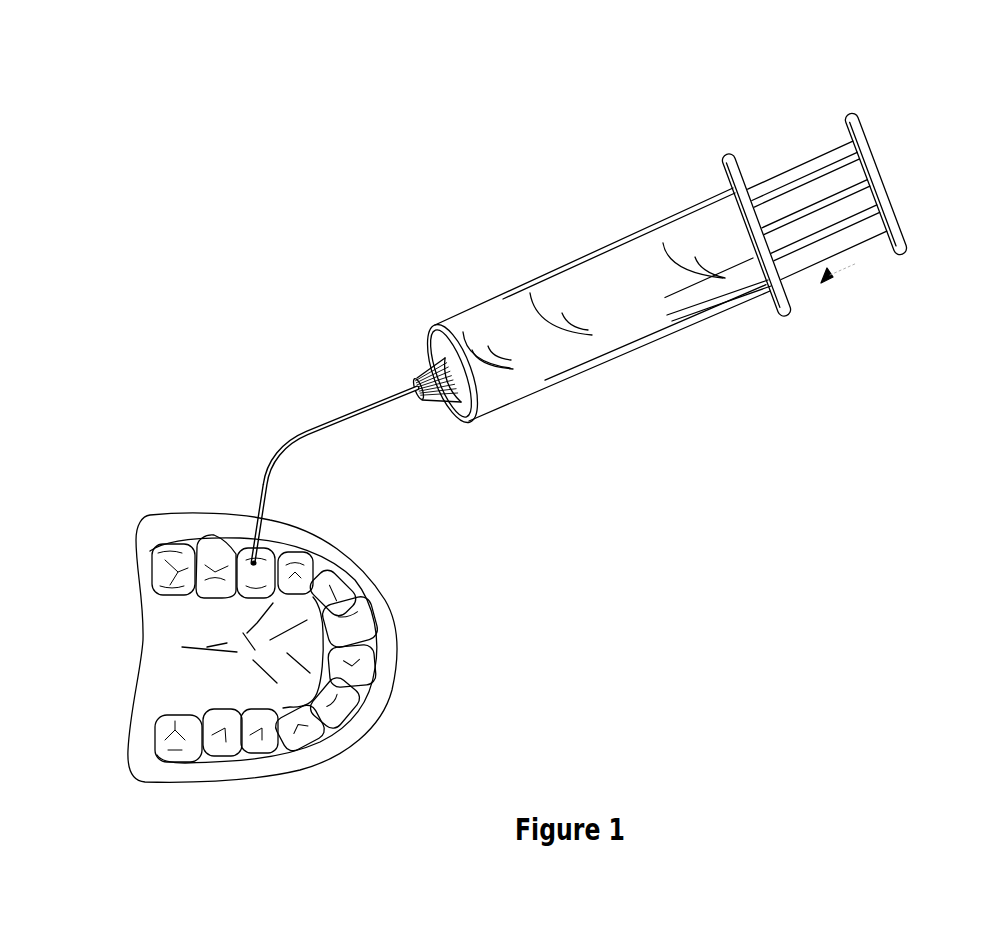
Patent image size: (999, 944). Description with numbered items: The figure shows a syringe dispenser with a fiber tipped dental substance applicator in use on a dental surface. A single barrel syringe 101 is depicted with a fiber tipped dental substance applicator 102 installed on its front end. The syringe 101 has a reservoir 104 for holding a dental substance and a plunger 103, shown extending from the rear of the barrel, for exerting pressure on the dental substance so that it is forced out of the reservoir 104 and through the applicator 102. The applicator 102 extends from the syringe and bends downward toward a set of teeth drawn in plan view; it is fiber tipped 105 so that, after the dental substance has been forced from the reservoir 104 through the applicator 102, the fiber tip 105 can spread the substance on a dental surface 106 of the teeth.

The single barrel syringe 101 is at (550, 208).
The fiber tipped dental substance applicator 102 is at (333, 422).
The plunger 103 is at (862, 128).
The reservoir 104 is at (647, 304).
The fiber tip 105 is at (193, 543).
The dental surface 106 is at (222, 570).